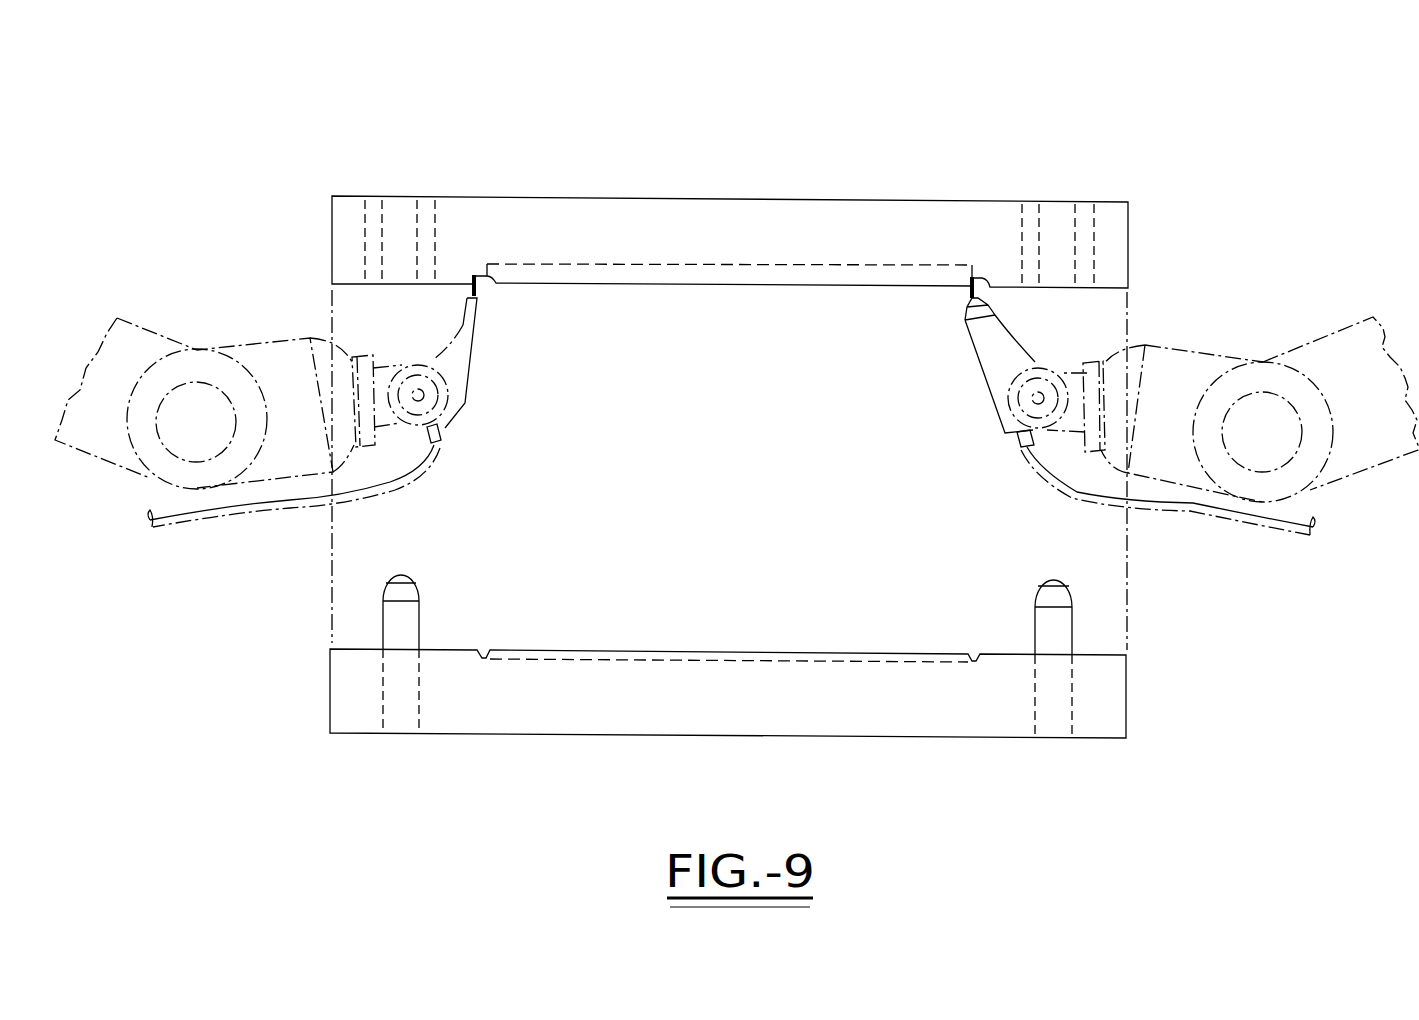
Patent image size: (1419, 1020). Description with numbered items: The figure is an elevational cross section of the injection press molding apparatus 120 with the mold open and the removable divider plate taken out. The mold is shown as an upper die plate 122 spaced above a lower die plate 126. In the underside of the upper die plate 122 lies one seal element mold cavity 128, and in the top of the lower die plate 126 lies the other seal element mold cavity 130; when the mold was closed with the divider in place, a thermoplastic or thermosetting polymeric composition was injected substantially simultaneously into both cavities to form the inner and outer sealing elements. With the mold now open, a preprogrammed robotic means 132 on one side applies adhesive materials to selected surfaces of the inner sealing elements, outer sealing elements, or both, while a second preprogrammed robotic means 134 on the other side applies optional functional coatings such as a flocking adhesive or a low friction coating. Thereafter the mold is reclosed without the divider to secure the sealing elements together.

The injection press molding apparatus 120 is at (1056, 176).
The upper die plate 122 is at (755, 218).
The lower die plate 126 is at (848, 725).
The seal element mold cavity 128 is at (747, 277).
The seal element mold cavity 130 is at (757, 657).
The preprogrammed robotic means 132 is at (167, 347).
The preprogrammed robotic means 134 is at (1312, 360).